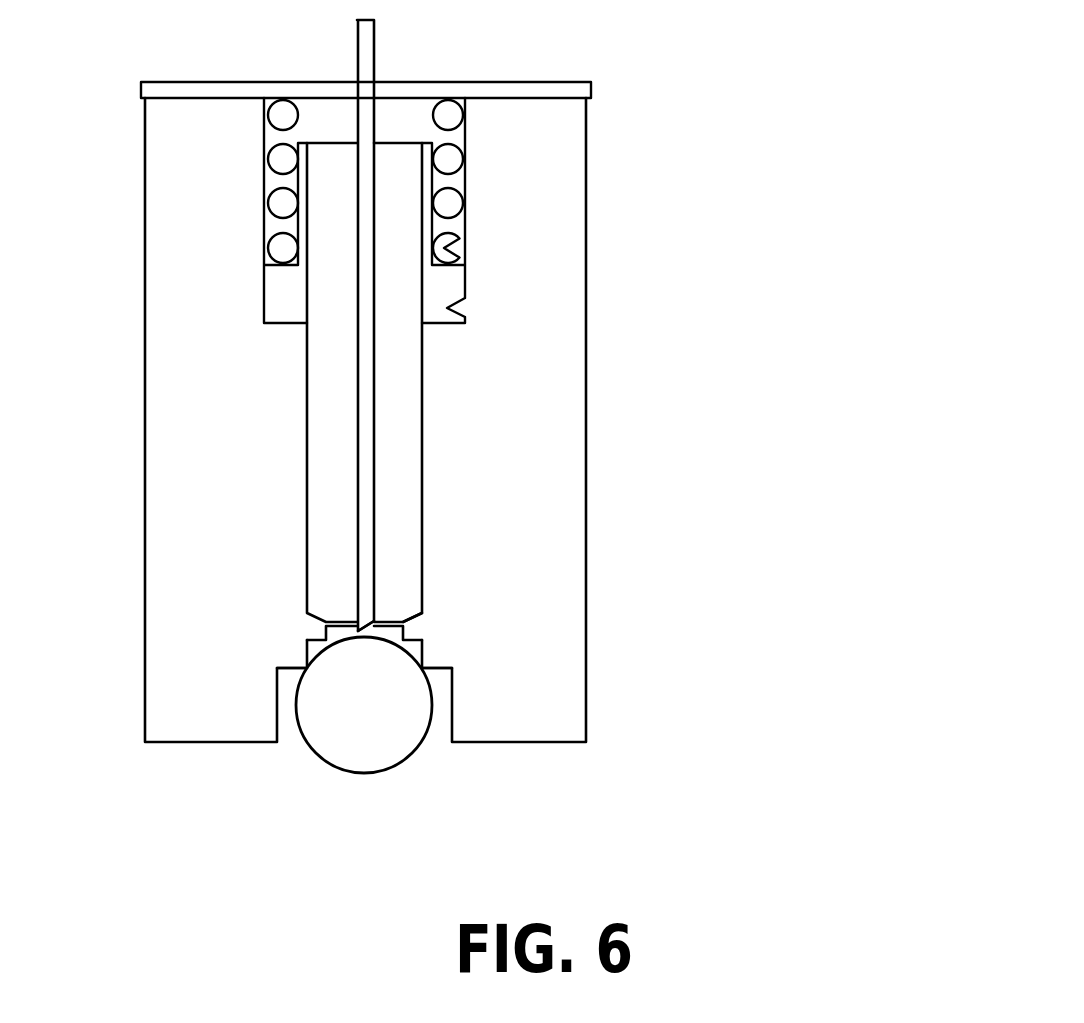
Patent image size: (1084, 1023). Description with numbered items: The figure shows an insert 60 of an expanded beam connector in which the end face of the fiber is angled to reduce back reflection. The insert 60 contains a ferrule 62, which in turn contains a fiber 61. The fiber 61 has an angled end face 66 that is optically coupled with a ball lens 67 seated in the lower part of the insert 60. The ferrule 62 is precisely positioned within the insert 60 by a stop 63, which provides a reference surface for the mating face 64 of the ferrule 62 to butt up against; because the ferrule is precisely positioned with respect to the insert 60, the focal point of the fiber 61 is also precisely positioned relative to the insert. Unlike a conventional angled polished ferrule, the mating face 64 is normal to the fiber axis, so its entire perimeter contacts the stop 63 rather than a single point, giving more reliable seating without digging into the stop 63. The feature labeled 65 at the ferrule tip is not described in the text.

The insert 60 is at (500, 417).
The fiber 61 is at (377, 50).
The ferrule 62 is at (407, 507).
The stop 63 is at (418, 627).
The mating face 64 is at (425, 670).
The ferrule tip chamfer 65 is at (405, 620).
The angled end face 66 is at (362, 623).
The ball lens 67 is at (380, 713).